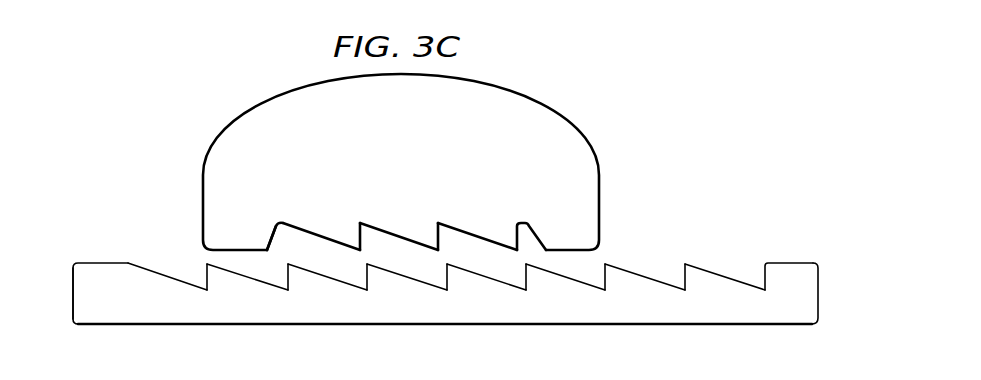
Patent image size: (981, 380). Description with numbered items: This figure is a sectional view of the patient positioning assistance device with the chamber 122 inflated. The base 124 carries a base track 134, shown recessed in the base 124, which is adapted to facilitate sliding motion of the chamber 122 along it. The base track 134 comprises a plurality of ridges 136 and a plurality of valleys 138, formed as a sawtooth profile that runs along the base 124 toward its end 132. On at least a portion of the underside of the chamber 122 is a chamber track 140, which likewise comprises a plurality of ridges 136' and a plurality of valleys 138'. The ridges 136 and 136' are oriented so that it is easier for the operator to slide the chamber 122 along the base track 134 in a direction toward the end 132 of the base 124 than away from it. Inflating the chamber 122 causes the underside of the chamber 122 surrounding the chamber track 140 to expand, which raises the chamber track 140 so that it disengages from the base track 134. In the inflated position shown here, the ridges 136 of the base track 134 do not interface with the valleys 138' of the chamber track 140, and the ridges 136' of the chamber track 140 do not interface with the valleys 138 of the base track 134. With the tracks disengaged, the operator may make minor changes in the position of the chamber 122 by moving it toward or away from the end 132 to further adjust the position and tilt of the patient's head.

The chamber 122 is at (205, 168).
The base 124 is at (818, 305).
The end 132 is at (73, 313).
The base track 134 is at (777, 277).
The ridges 136 is at (434, 249).
The valleys 138 is at (436, 289).
The ridges 136' is at (419, 220).
The valleys 138' is at (400, 217).
The chamber track 140 is at (288, 248).